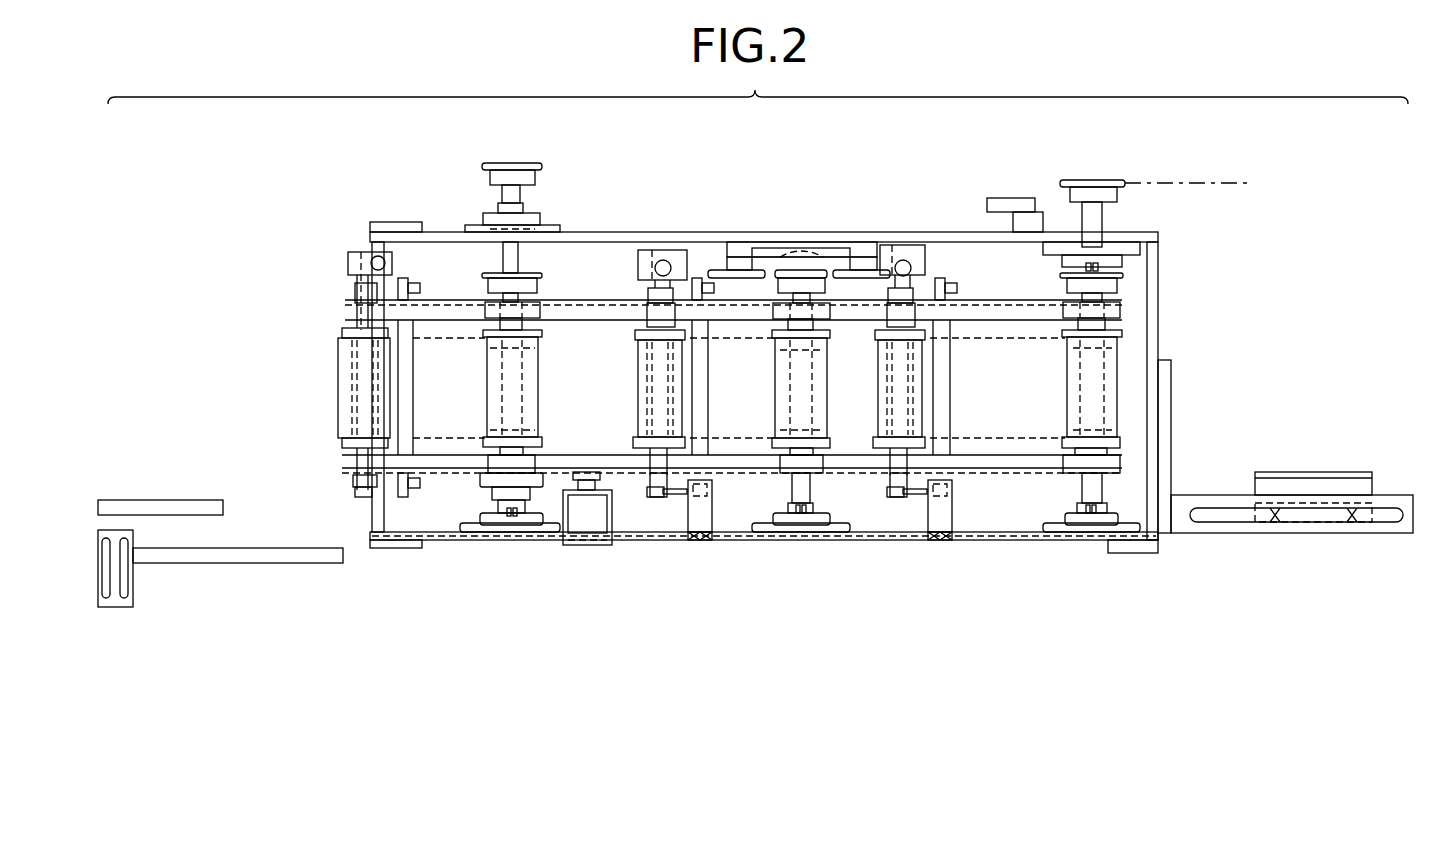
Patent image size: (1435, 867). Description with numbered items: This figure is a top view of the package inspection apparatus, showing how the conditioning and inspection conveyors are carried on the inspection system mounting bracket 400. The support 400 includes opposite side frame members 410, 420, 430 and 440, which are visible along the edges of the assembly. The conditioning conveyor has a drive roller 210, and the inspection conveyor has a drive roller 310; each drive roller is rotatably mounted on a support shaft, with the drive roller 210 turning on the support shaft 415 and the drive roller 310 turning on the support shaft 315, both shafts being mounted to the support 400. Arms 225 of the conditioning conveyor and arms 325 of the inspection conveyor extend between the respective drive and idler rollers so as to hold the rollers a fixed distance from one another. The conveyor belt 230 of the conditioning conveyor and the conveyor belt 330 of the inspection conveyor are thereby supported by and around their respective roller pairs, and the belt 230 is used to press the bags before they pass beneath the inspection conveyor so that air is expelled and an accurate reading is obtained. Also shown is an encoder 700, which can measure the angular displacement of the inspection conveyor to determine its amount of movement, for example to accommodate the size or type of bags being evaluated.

The drive roller 210 is at (827, 408).
The arm 225 is at (742, 313).
The conveyor belt 230 is at (763, 392).
The drive roller 310 is at (538, 395).
The support shaft 315 is at (517, 259).
The arm 325 is at (447, 305).
The conveyor belt 330 is at (466, 392).
The inspection system mounting bracket 400 is at (817, 548).
The side frame member 410 is at (917, 238).
The support shaft 415 is at (803, 484).
The side frame member 420 is at (862, 538).
The side frame member 430 is at (1152, 292).
The side frame member 440 is at (377, 308).
The encoder 700 is at (574, 551).